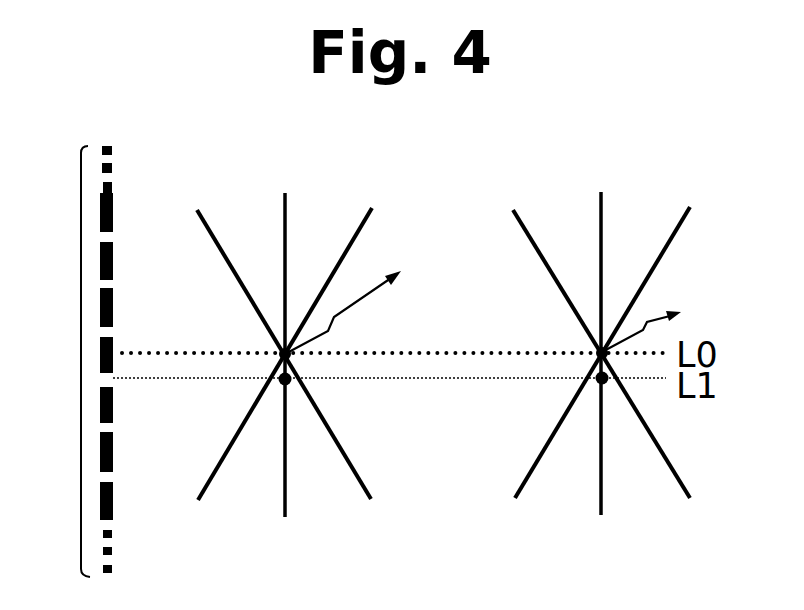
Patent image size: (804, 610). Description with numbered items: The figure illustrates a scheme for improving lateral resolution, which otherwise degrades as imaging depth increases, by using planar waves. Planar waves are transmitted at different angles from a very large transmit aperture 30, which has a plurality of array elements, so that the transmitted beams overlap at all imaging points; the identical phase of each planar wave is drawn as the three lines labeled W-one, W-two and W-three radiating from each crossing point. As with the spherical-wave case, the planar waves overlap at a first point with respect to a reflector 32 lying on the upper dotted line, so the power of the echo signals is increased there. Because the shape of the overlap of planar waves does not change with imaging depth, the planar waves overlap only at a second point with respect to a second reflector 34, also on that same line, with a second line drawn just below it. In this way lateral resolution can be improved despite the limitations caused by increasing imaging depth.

The transmit aperture 30 is at (68, 361).
The reflector 32 is at (280, 350).
The reflector 34 is at (597, 348).